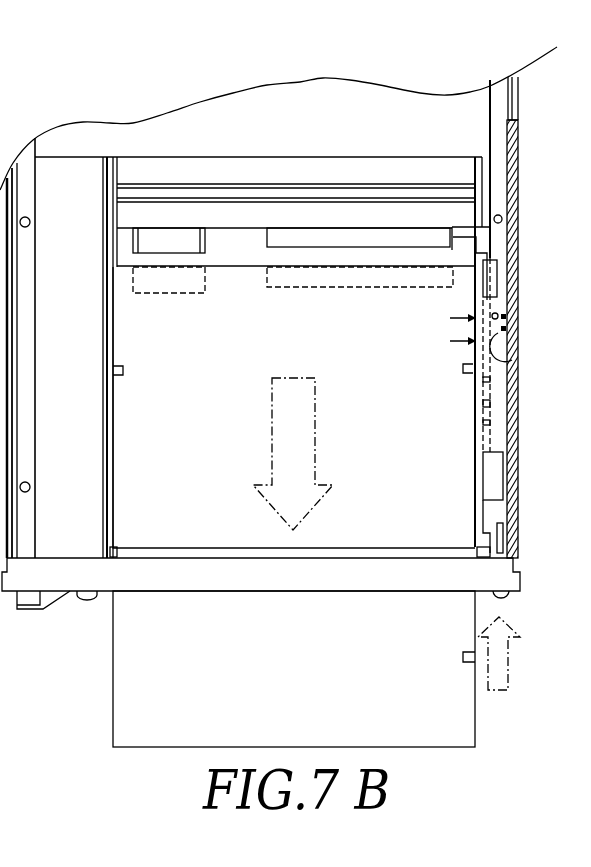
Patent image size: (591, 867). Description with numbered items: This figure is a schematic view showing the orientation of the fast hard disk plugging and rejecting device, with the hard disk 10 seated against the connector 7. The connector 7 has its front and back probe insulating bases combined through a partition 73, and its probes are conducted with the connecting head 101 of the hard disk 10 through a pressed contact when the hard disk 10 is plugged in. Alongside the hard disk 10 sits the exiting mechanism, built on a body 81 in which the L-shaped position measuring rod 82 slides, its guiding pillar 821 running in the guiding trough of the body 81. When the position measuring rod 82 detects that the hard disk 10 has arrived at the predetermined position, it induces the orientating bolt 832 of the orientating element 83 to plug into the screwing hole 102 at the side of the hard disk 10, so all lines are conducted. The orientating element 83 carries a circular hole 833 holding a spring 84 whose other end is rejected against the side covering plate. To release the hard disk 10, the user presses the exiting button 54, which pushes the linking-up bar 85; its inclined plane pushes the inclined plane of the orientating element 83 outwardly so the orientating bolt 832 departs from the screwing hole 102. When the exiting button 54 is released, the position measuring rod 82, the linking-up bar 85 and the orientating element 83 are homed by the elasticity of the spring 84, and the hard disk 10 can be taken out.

The partition 73 is at (258, 188).
The connector 7 is at (352, 252).
The connecting head 101 is at (305, 291).
The screwing hole 102 is at (463, 369).
The position measuring rod 82 is at (497, 227).
The guiding pillar 821 is at (493, 280).
The orientating bolt 832 is at (504, 318).
The spring 84 is at (507, 328).
The orientating element 83 is at (518, 348).
The circular hole 833 is at (495, 344).
The body 81 is at (478, 296).
The linking-up bar 85 is at (488, 474).
The exiting button 54 is at (505, 600).
The hard disk 10 is at (482, 722).